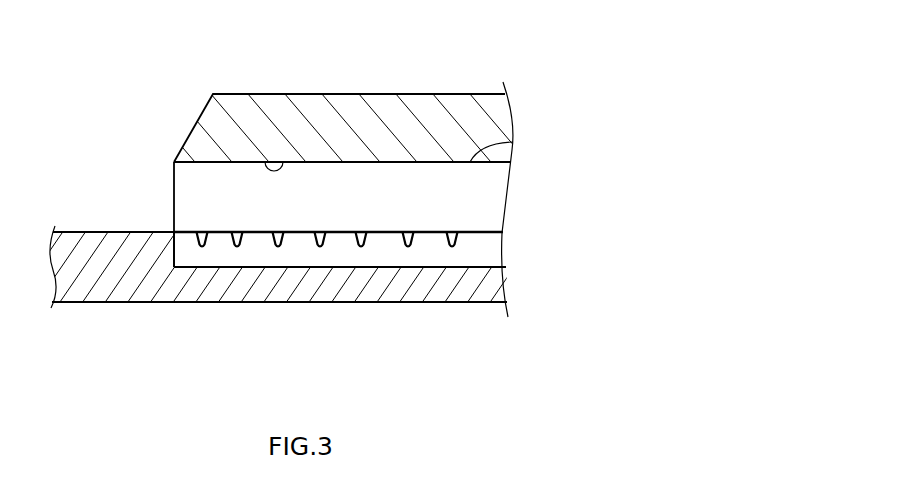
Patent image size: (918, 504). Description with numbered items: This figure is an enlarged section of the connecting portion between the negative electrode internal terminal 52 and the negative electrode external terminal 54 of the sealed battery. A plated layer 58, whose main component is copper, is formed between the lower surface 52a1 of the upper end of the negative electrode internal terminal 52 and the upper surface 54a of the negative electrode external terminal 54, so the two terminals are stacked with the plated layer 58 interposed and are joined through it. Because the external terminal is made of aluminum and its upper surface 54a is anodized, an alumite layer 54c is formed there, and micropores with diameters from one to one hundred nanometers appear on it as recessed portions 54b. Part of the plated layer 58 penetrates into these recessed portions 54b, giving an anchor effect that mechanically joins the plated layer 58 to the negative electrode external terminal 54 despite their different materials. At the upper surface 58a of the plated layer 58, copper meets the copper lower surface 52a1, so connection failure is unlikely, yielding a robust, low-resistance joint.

The negative electrode internal terminal 52 is at (415, 102).
The lower surface of the upper end of the negative electrode internal terminal 52a1 is at (283, 162).
The plated layer 58 is at (500, 199).
The upper surface of the plated layer 58a is at (513, 142).
The negative electrode external terminal 54 is at (93, 232).
The upper surface of the negative electrode external terminal 54a is at (185, 233).
The recessed portions 54b is at (282, 224).
The alumite layer 54c is at (492, 257).